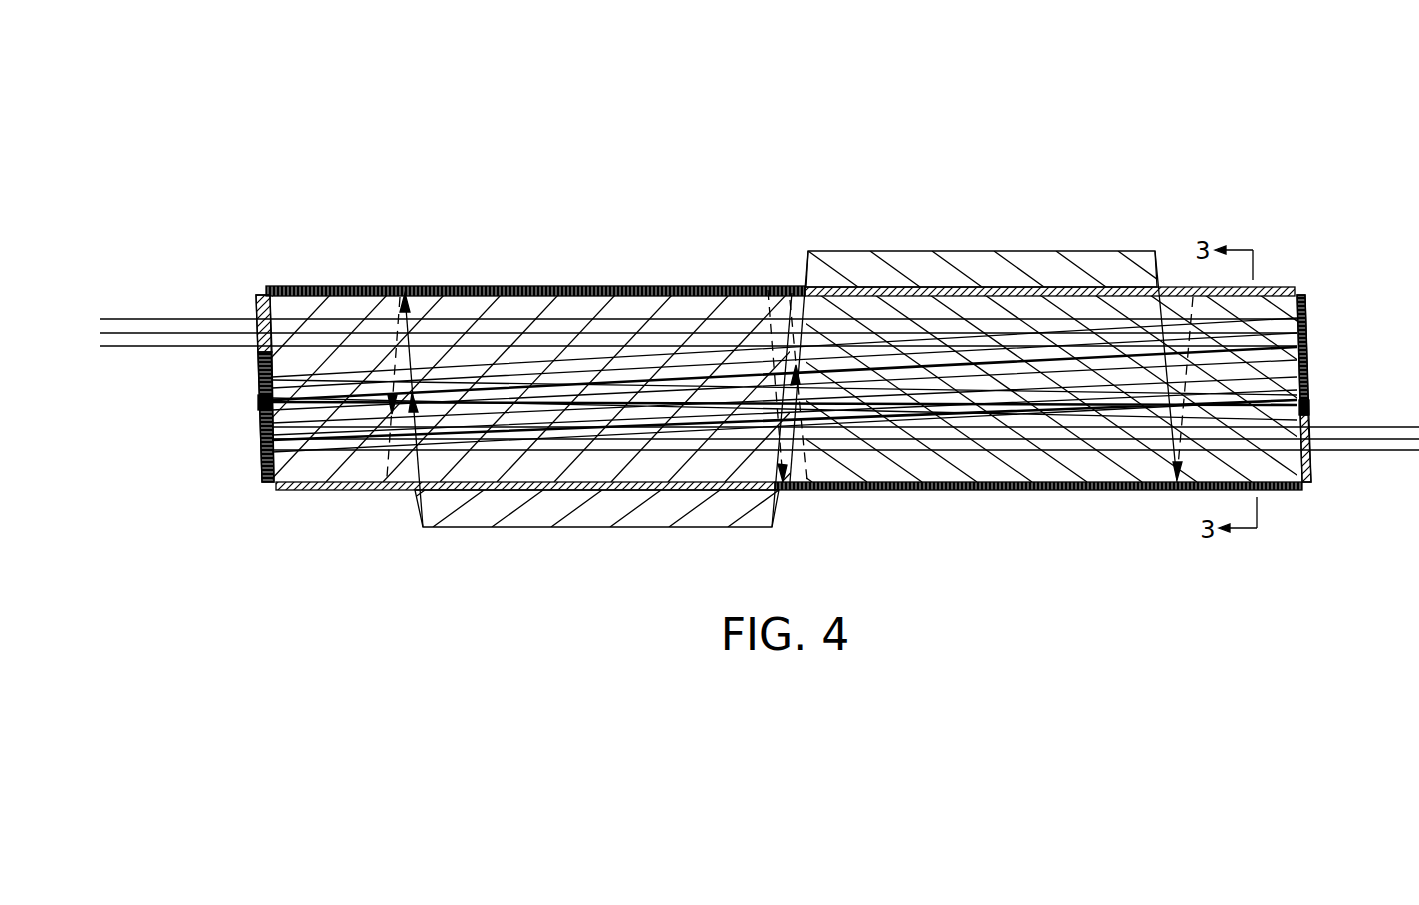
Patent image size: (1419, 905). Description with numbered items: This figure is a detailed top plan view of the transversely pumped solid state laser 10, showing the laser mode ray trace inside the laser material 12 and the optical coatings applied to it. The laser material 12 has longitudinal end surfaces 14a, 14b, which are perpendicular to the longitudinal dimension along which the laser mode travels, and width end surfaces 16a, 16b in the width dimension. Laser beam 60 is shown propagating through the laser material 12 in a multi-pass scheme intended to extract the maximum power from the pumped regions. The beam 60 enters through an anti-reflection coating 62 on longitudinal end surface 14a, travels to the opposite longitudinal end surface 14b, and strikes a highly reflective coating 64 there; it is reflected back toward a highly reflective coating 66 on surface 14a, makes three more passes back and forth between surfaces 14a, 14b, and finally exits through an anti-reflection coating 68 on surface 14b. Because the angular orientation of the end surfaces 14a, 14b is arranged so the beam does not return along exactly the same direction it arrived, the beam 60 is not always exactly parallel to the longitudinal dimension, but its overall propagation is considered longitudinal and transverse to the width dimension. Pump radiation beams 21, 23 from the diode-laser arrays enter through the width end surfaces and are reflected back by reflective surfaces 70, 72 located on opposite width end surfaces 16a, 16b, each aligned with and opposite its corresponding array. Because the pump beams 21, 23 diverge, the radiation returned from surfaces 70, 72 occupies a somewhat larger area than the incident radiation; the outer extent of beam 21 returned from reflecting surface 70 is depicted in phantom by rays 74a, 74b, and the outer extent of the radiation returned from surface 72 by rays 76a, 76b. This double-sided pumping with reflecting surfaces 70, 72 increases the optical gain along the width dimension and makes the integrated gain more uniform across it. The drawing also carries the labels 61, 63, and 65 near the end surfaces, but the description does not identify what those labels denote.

The transversely pumped solid state laser 10 is at (604, 79).
The laser material 12 is at (295, 470).
The longitudinal end surface 14a is at (243, 354).
The longitudinal end surface 14b is at (1325, 434).
The width end surface 16a is at (376, 286).
The width end surface 16b is at (335, 492).
The laser radiation beam 21 is at (600, 530).
The laser radiation beam 23 is at (988, 250).
The laser beam 60 is at (139, 310).
The output optical fiber 61 is at (1272, 318).
The anti-reflection coating 62 is at (1273, 428).
The fiber cladding 63 is at (1270, 376).
The highly reflective coating 64 is at (1313, 310).
The ferrule 65 is at (258, 300).
The highly reflective coating 66 is at (262, 405).
The anti-reflection coating 68 is at (1313, 470).
The reflective surface 70 is at (580, 287).
The reflective surface 72 is at (1016, 490).
The ray 74a is at (388, 460).
The ray 74b is at (808, 466).
The ray 76a is at (773, 307).
The ray 76b is at (1192, 298).